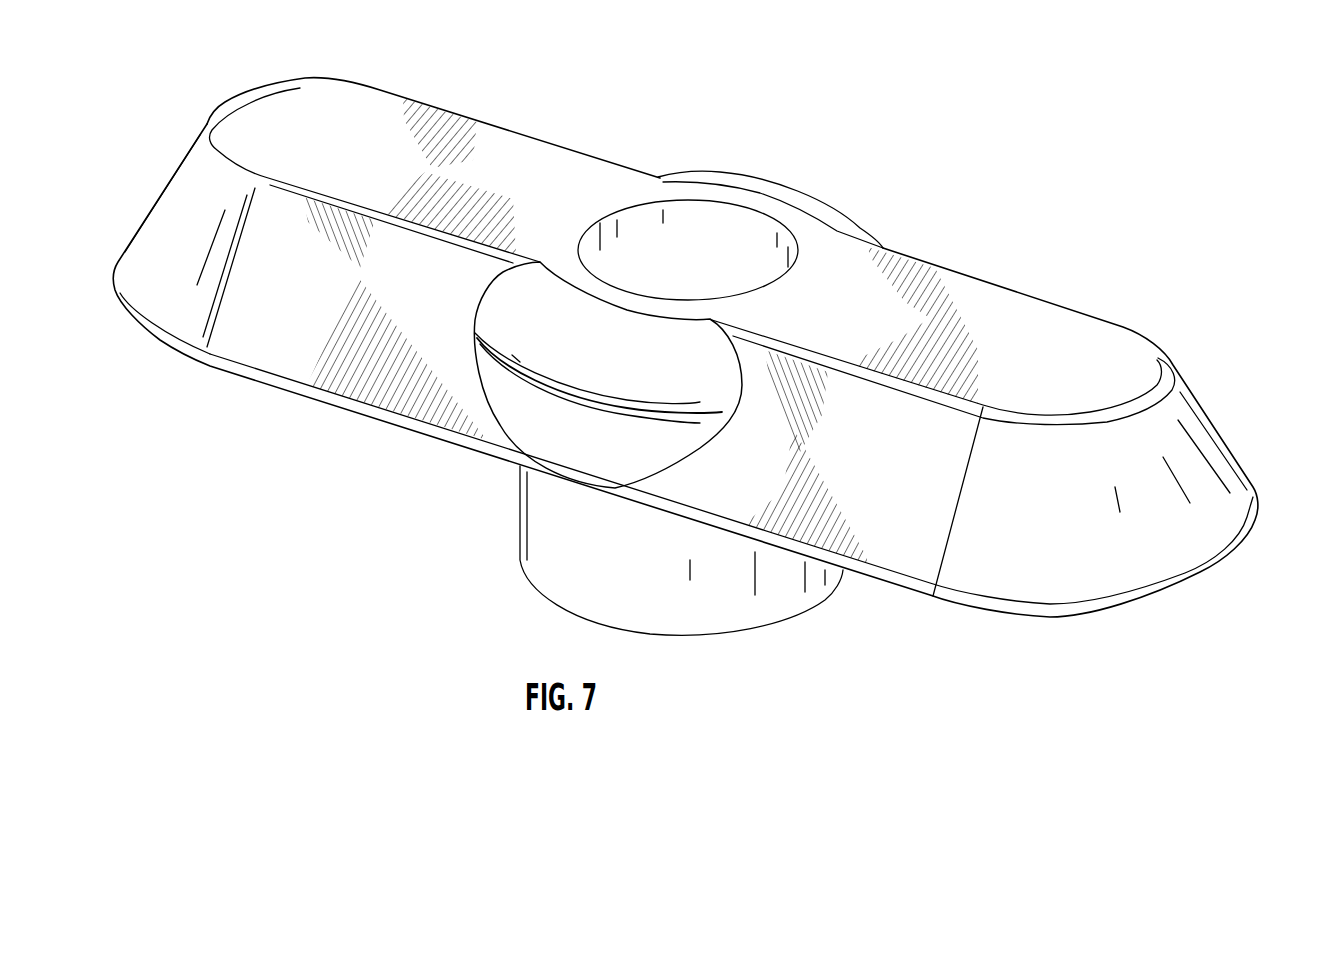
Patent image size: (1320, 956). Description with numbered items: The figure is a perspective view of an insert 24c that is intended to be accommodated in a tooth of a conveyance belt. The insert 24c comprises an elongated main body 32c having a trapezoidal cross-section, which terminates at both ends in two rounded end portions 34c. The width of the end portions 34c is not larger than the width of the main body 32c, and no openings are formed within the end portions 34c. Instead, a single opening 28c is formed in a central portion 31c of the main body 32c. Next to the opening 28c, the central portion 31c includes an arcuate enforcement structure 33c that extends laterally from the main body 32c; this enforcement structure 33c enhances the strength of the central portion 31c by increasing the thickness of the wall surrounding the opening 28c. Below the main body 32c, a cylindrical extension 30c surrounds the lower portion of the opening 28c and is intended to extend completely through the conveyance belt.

The insert 24c is at (1048, 132).
The opening 28c is at (725, 235).
The cylindrical extension 30c is at (760, 597).
The central portion 31c is at (843, 105).
The main body 32c is at (1122, 270).
The arcuate enforcement structure 33c is at (150, 174).
The rounded end portions 34c is at (1258, 425).